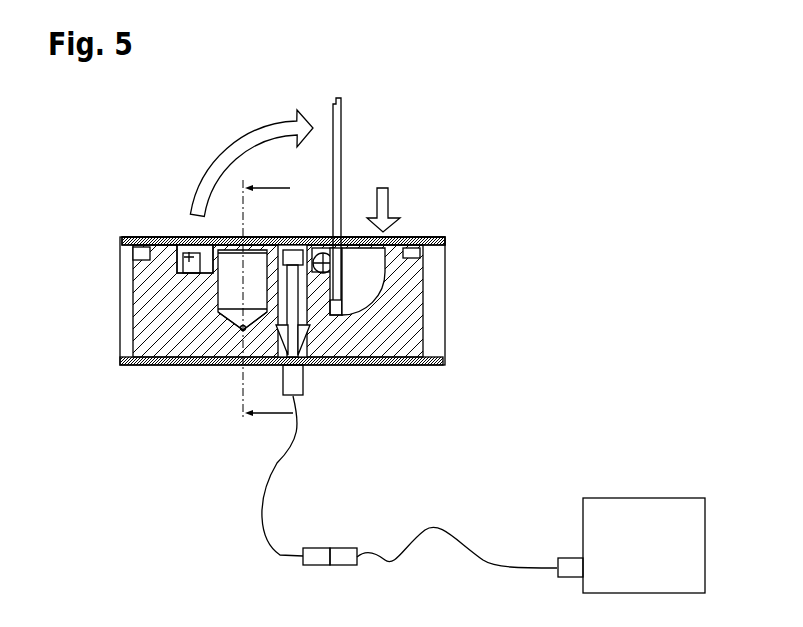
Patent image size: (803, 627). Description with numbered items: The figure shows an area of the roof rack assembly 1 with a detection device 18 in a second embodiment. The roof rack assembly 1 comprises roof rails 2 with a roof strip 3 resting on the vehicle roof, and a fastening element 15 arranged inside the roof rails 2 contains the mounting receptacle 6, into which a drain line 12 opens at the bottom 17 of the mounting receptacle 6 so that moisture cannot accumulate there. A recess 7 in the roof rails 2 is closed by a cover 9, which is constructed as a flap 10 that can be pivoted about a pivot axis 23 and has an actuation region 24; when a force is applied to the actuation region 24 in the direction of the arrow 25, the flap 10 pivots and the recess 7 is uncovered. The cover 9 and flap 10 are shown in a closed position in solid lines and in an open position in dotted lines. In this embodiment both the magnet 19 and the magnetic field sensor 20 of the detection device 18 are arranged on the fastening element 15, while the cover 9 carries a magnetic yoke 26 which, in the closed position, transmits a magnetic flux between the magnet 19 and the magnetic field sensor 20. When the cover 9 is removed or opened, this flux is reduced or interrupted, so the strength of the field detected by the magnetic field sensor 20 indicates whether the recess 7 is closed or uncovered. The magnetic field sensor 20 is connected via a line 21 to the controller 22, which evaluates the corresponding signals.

The roof rack assembly 1 is at (490, 241).
The roof rails 2 is at (451, 231).
The roof strip 3 is at (428, 236).
The mounting receptacle 6 is at (230, 292).
The recess 7 is at (287, 237).
The cover 9 is at (183, 237).
The flap 10 is at (195, 259).
The drain line 12 is at (241, 333).
The fastening element 15 is at (136, 305).
The bottom 17 is at (262, 322).
The detection device 18 is at (260, 76).
The magnet 19 is at (140, 258).
The magnetic field sensor 20 is at (296, 293).
The line 21 is at (262, 512).
The controller 22 is at (645, 508).
The pivot axis 23 is at (330, 256).
The actuation region 24 is at (409, 229).
The arrow 25 is at (382, 187).
The magnetic yoke 26 is at (188, 237).